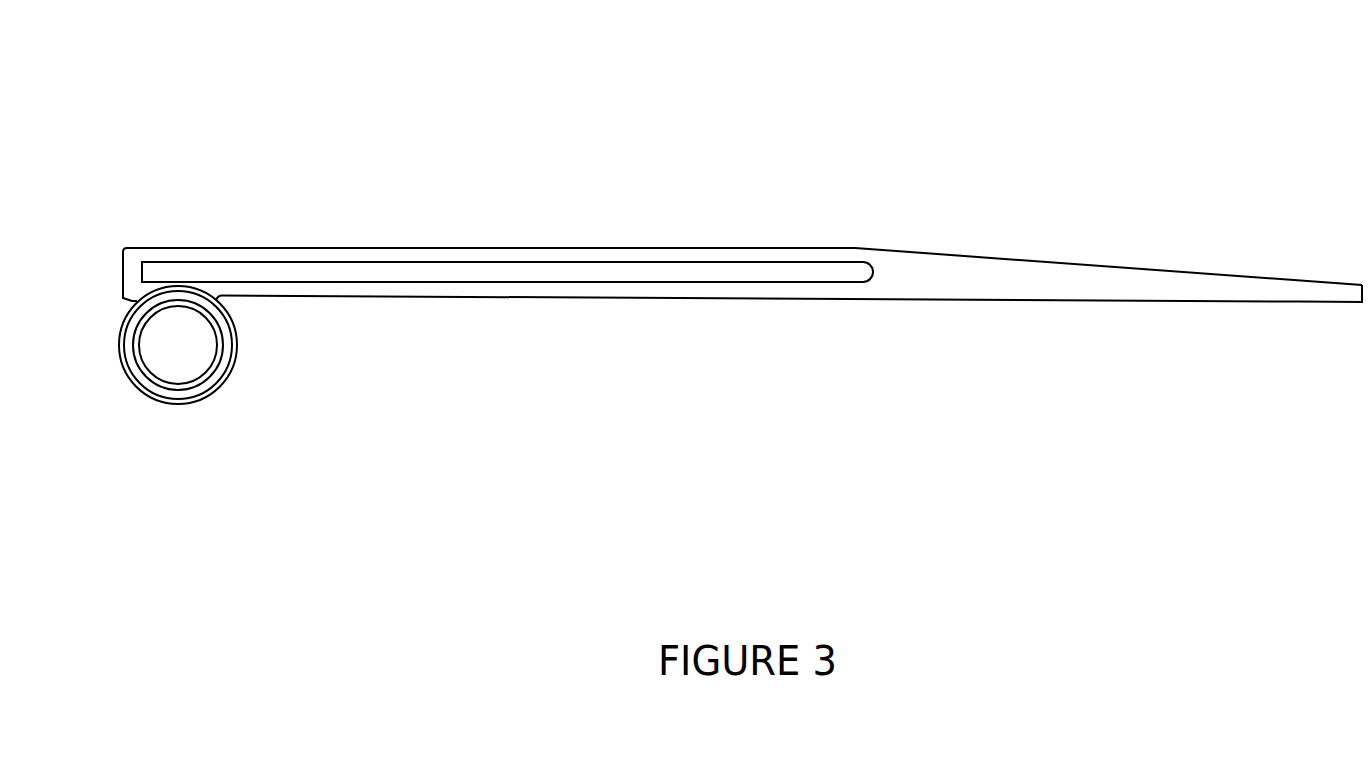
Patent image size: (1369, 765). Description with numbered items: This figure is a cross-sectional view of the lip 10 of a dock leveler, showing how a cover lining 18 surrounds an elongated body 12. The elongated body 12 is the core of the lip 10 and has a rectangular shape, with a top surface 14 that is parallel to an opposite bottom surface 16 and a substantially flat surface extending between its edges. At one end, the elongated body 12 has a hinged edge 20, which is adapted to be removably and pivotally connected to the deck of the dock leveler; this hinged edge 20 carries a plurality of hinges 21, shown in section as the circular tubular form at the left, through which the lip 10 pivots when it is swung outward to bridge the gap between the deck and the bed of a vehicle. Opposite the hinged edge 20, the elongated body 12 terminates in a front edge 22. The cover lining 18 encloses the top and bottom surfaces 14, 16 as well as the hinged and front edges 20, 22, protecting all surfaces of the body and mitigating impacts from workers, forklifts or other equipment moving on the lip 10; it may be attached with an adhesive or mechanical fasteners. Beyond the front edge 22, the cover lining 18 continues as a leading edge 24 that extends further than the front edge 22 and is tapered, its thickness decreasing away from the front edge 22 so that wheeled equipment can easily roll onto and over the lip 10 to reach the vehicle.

The lip 10 is at (1045, 182).
The elongated body 12 is at (558, 273).
The top surface 14 is at (662, 258).
The bottom surface 16 is at (485, 289).
The cover lining 18 is at (968, 280).
The hinged edge 20 is at (112, 270).
The hinges 21 is at (188, 402).
The front edge 22 is at (875, 270).
The leading edge 24 is at (1143, 289).